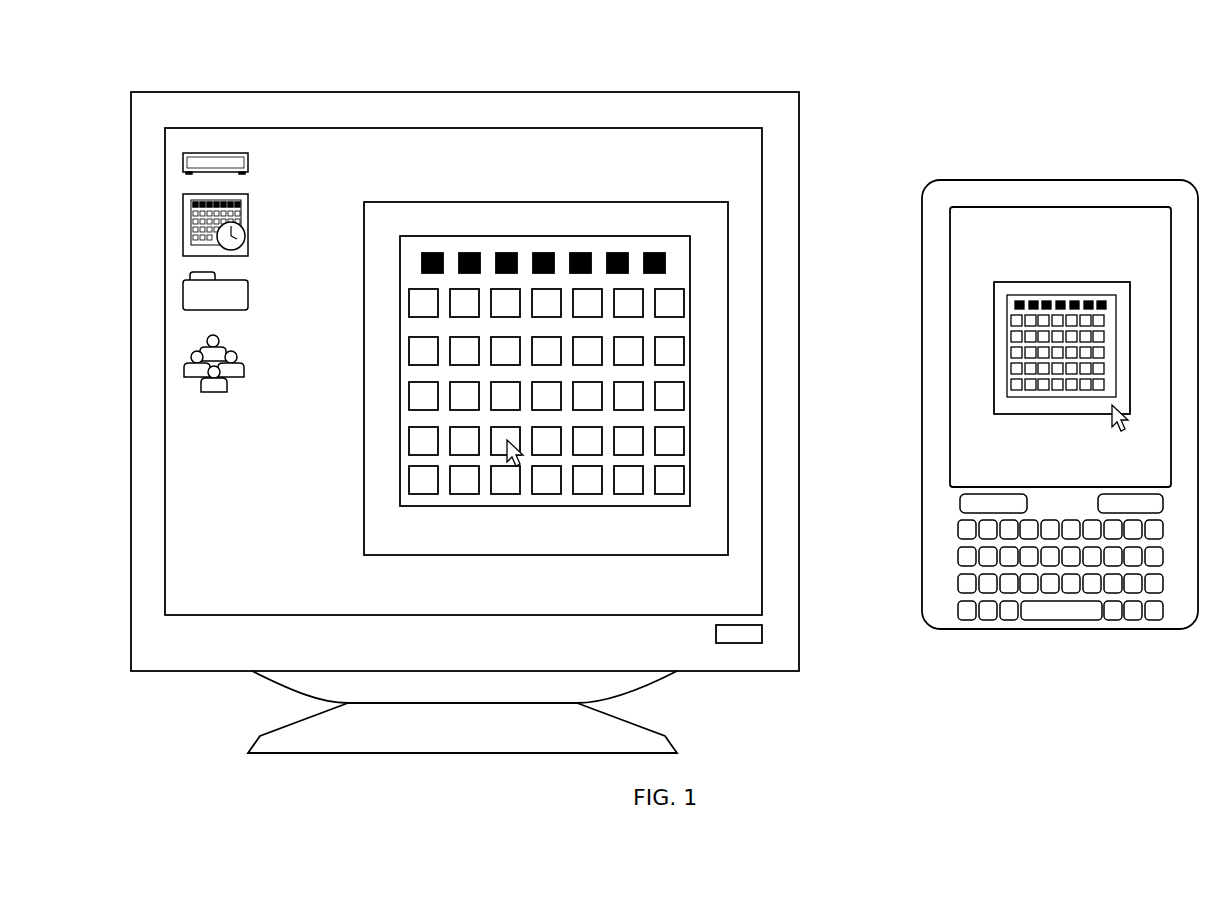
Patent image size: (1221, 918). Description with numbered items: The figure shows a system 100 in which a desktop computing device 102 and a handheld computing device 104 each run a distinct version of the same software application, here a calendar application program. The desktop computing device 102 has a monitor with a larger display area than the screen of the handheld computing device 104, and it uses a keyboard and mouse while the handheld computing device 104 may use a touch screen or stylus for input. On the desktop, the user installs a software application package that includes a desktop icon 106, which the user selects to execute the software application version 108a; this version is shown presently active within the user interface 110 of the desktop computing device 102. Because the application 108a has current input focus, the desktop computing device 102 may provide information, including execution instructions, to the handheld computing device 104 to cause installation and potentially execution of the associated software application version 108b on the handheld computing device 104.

The system 100 is at (972, 87).
The desktop computing device 102 is at (737, 92).
The handheld computing device 104 is at (1148, 180).
The desktop icon 106 is at (248, 226).
The software application version 108a is at (583, 202).
The software application version 108b is at (1075, 283).
The user interface 110 is at (738, 600).